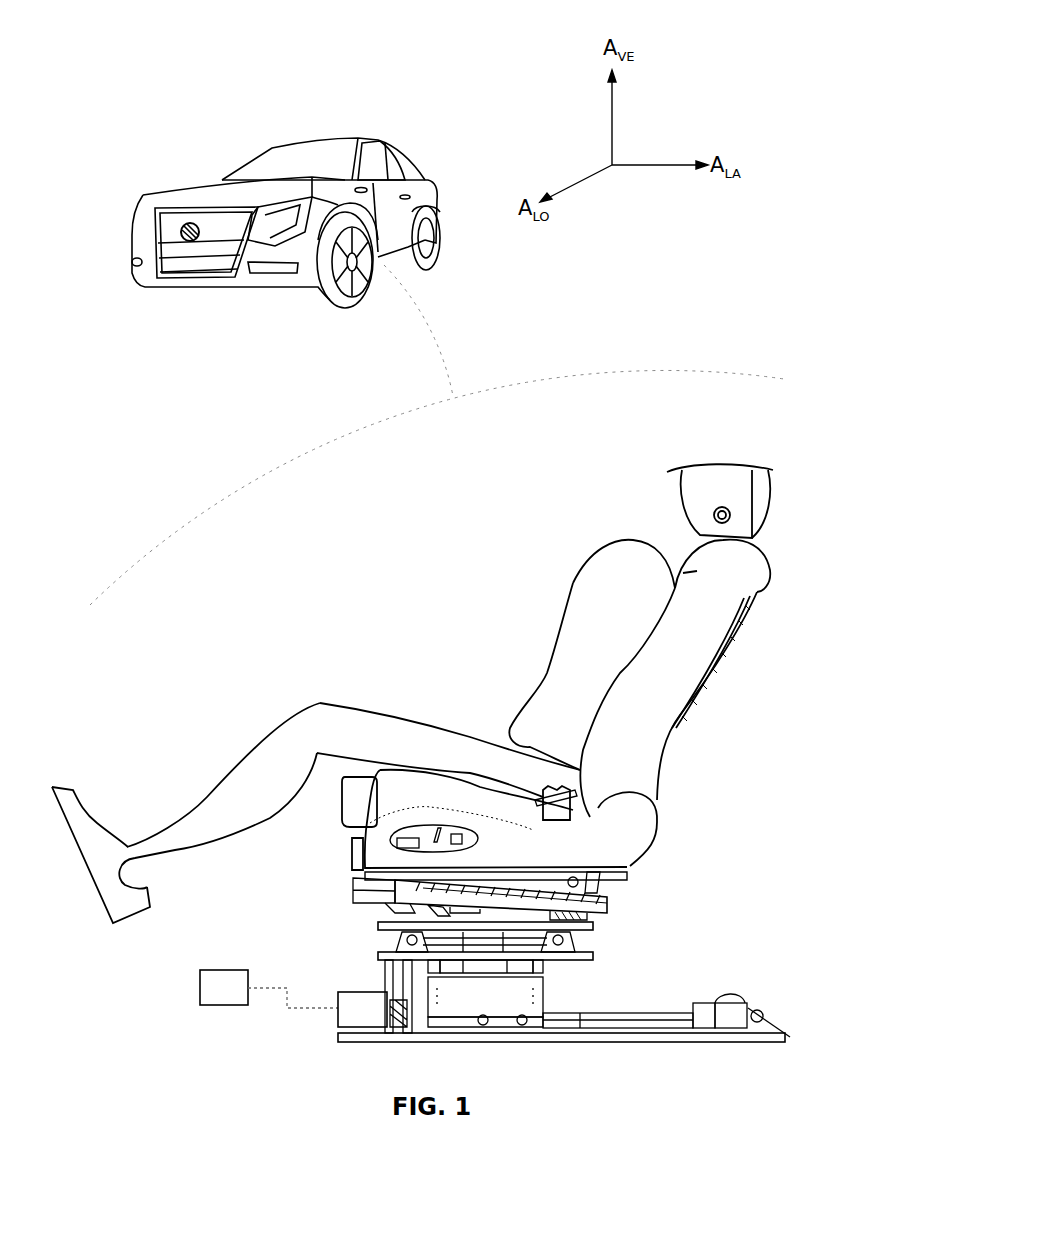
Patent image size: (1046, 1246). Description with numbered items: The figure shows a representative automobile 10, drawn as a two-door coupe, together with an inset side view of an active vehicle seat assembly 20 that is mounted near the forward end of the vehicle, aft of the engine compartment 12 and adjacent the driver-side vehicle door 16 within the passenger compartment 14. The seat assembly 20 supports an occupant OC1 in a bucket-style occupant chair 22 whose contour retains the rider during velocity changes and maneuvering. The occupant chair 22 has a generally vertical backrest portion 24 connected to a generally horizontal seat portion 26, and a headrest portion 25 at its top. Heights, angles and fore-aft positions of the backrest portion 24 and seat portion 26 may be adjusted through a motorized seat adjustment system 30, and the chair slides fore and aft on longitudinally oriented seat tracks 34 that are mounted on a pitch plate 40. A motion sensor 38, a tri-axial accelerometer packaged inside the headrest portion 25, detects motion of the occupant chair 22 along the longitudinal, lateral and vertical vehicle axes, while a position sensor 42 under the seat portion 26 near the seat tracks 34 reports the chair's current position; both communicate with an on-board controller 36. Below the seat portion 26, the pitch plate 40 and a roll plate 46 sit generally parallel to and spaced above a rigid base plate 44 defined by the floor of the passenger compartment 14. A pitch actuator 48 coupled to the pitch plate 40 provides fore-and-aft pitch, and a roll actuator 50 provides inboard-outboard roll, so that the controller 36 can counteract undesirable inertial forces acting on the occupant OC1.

The automobile 10 is at (208, 90).
The engine compartment 12 is at (184, 196).
The passenger compartment 14 is at (400, 140).
The driver-side vehicle door 16 is at (411, 206).
The active vehicle seat assembly 20 is at (441, 539).
The occupant chair 22 is at (724, 787).
The backrest portion 24 is at (716, 667).
The headrest portion 25 is at (768, 490).
The seat portion 26 is at (655, 835).
The motorized seat adjustment system 30 is at (392, 843).
The seat tracks 34 is at (378, 893).
The on-board controller 36 is at (222, 970).
The motion sensor 38 is at (711, 517).
The pitch plate 40 is at (593, 926).
The position sensor 42 is at (580, 882).
The base plate 44 is at (786, 1037).
The roll plate 46 is at (593, 956).
The pitch actuator 48 is at (676, 1002).
The roll actuator 50 is at (357, 990).
The occupant OC1 is at (574, 581).